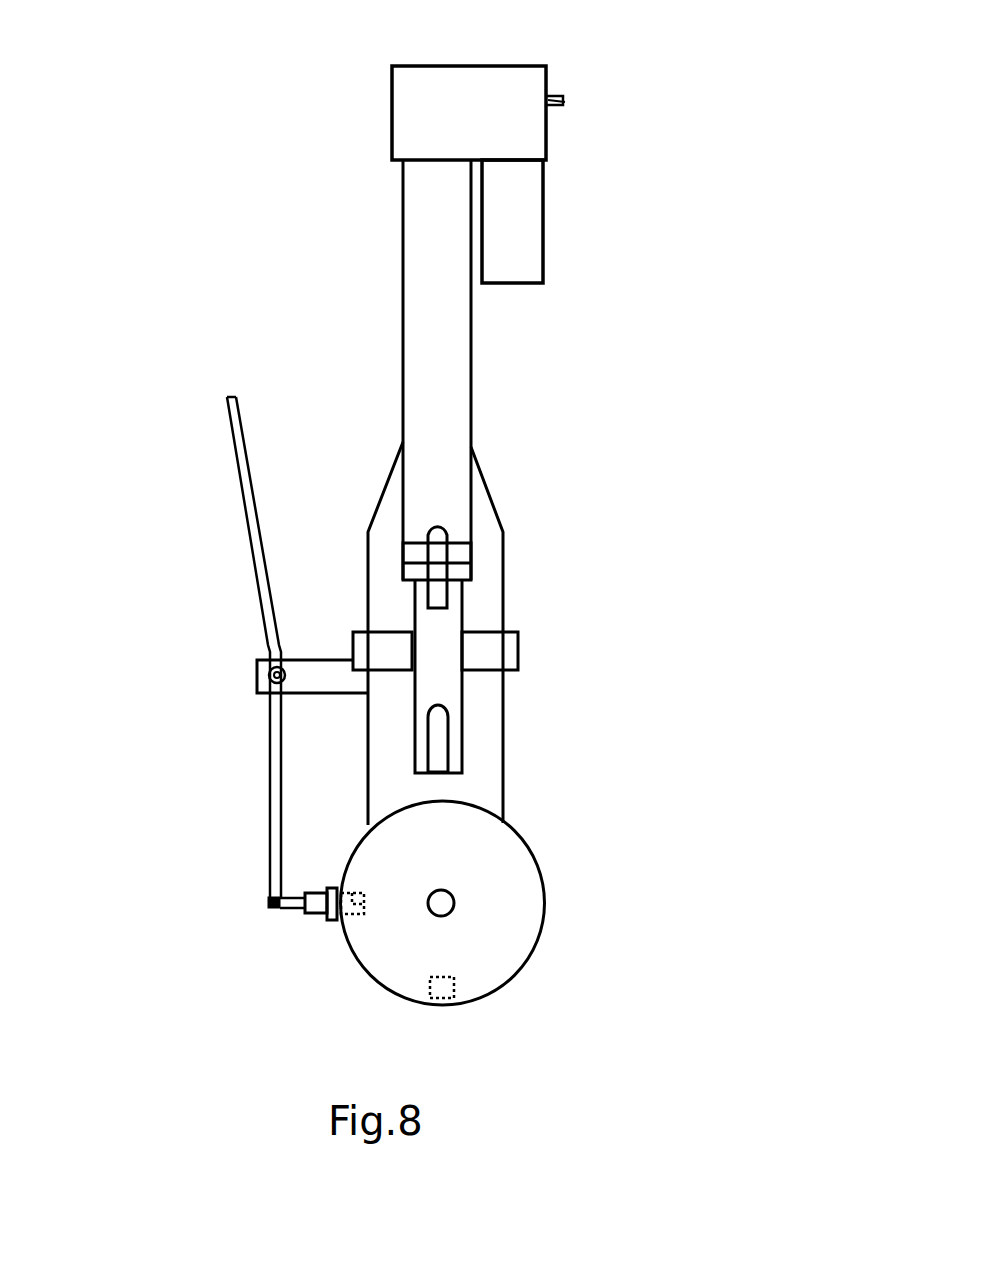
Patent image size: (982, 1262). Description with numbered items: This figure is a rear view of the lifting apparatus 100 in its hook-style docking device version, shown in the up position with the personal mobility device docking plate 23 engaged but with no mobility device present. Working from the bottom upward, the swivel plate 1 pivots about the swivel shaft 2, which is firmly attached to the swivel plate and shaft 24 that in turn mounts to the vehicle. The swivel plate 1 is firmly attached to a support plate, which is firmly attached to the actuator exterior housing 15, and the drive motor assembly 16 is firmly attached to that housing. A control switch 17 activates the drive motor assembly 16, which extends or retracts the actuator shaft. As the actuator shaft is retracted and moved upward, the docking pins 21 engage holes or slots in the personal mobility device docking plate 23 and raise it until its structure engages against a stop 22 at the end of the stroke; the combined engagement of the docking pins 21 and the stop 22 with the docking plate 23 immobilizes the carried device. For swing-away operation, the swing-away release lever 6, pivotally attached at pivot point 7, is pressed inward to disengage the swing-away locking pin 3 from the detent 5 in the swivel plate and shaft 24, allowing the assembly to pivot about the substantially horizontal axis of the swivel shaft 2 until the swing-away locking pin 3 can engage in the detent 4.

The lifting apparatus 100 is at (244, 49).
The control switch 17 is at (565, 100).
The drive motor assembly 16 is at (512, 218).
The actuator exterior housing 15 is at (440, 498).
The personal mobility device docking plate 23 is at (455, 553).
The swivel plate and shaft 24 is at (442, 667).
The docking pins 21 is at (437, 575).
The stop 22 is at (393, 647).
The pivot point 7 is at (262, 670).
The swing-away release lever 6 is at (272, 808).
The detent 5 is at (350, 917).
The swing-away locking pin 3 is at (328, 885).
The swivel plate 1 is at (508, 900).
The swivel shaft 2 is at (447, 908).
The detent 4 is at (430, 997).